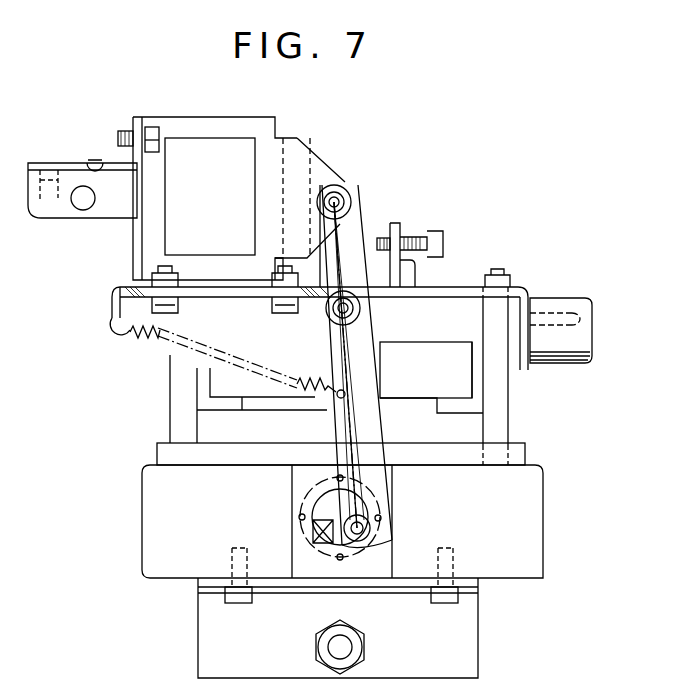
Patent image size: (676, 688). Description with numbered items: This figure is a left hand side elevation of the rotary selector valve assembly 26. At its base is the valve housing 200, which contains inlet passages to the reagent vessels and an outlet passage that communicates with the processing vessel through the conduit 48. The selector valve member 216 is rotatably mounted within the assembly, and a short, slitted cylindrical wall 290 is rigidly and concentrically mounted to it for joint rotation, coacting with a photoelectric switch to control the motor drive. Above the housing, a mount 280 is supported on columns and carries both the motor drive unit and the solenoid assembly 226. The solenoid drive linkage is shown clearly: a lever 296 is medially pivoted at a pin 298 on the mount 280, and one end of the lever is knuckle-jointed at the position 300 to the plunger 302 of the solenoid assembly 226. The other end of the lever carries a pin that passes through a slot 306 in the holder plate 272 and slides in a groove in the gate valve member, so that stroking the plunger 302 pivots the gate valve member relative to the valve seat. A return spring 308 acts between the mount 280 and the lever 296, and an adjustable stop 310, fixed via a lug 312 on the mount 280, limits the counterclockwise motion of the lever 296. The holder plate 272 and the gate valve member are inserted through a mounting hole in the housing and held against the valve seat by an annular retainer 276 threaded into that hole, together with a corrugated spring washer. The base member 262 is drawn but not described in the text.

The rotary selector valve assembly 26 is at (513, 238).
The conduit 48 is at (345, 646).
The valve housing 200 is at (525, 520).
The selector valve member 216 is at (490, 407).
The solenoid assembly 226 is at (200, 130).
The base plate 262 is at (475, 428).
The holder plate 272 is at (320, 503).
The annular retainer 276 is at (330, 555).
The mount 280 is at (222, 292).
The cylindrical wall 290 is at (460, 373).
The lever 296 is at (363, 368).
The pin 298 is at (348, 308).
The knuckle joint position 300 is at (340, 183).
The plunger 302 is at (297, 148).
The slot 306 is at (313, 530).
The return spring 308 is at (136, 340).
The adjustable stop 310 is at (380, 238).
The lug 312 is at (443, 282).